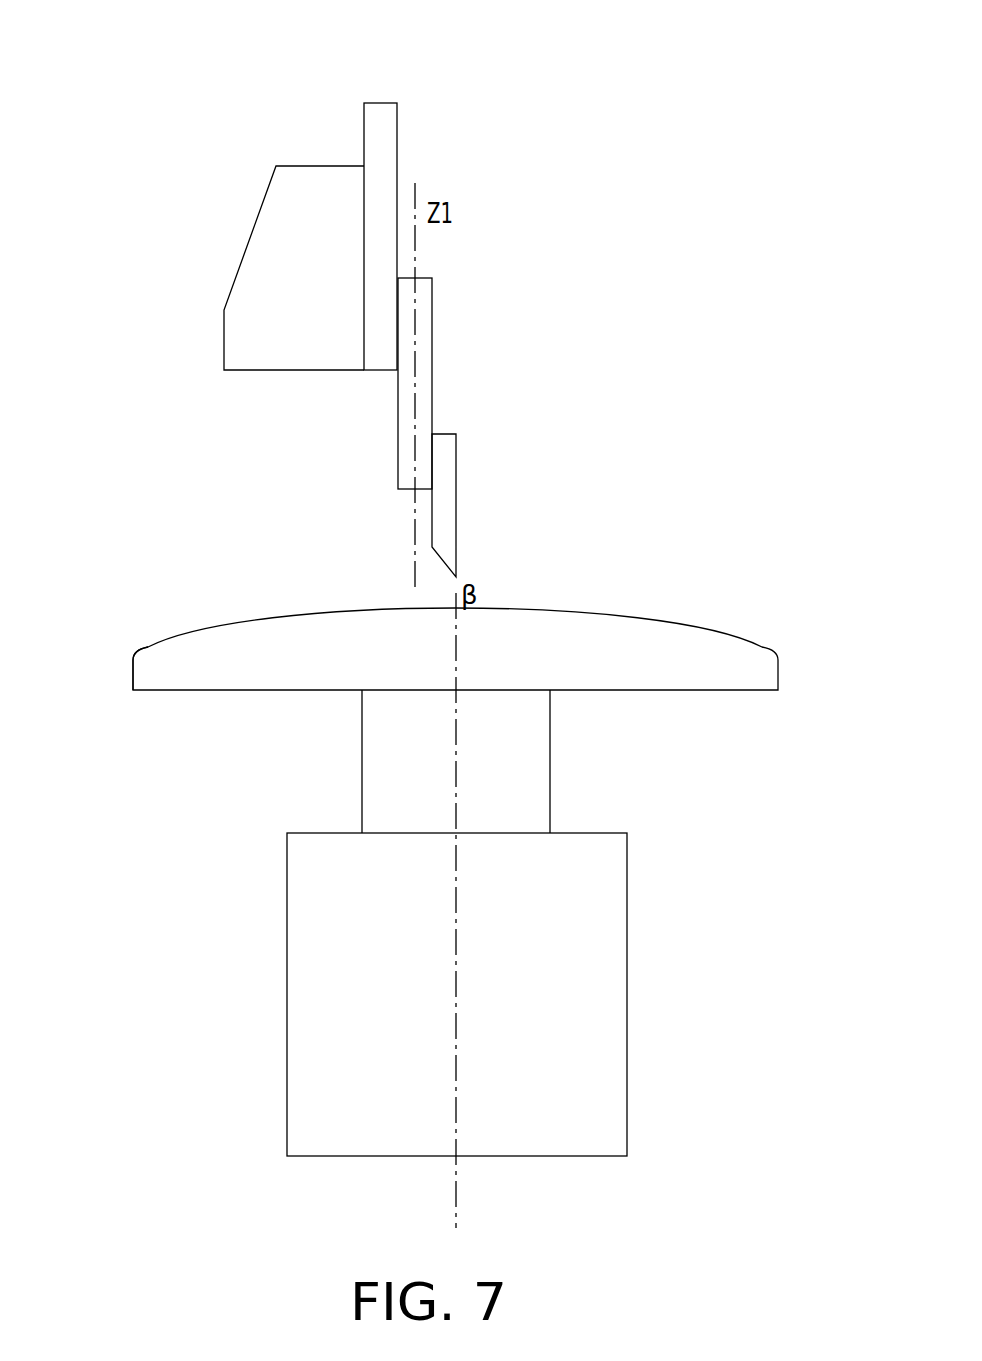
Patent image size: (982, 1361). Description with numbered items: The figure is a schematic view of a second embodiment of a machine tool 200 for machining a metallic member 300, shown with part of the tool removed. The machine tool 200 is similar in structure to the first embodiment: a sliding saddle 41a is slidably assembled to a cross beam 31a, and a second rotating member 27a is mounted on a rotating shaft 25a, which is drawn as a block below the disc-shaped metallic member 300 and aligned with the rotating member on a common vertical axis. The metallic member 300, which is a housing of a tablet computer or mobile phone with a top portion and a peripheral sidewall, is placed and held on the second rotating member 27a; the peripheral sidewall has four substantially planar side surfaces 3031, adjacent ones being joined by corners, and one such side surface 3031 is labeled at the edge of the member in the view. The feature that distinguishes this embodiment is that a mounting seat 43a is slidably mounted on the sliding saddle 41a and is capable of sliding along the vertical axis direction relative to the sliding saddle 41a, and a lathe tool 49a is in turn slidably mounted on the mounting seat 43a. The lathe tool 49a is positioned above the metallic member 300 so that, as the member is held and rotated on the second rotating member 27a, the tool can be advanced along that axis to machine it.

The machine tool 200 is at (462, 41).
The sliding saddle 41a is at (376, 131).
The cross beam 31a is at (283, 222).
The mounting seat 43a is at (408, 444).
The lathe tool 49a is at (446, 530).
The metallic member 300 is at (697, 620).
The side surface 3031 is at (132, 675).
The second rotating member 27a is at (388, 773).
The rotating shaft 25a is at (570, 1047).